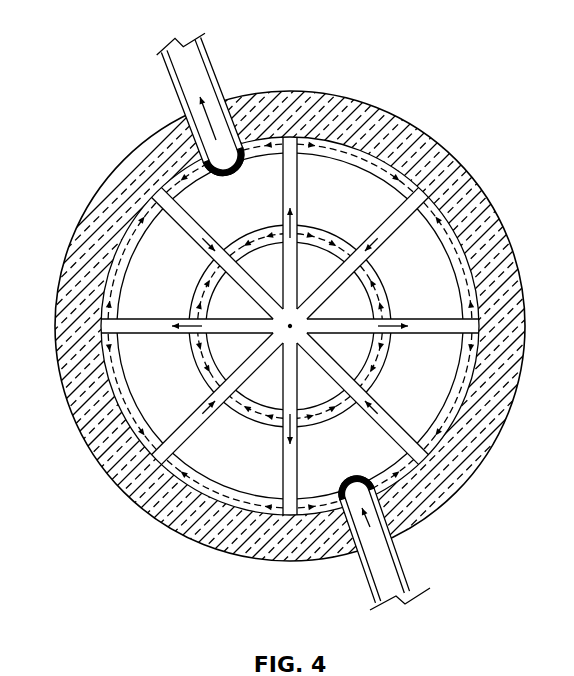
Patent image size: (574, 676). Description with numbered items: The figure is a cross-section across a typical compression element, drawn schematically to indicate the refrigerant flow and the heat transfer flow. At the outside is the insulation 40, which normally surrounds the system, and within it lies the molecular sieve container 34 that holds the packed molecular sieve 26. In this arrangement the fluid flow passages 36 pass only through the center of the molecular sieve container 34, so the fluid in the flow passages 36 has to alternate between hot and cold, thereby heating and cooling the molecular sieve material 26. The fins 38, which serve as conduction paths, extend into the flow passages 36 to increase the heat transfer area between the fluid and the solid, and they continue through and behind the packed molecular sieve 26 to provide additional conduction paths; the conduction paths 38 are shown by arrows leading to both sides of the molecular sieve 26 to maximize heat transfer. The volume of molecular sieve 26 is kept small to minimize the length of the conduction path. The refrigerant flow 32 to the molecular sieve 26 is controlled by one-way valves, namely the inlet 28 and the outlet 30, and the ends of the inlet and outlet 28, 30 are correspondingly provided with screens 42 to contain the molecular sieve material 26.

The molecular sieve 26 is at (290, 326).
The inlet 28 is at (391, 530).
The outlet 30 is at (218, 147).
The refrigerant flow 32 is at (286, 318).
The molecular sieve container 34 is at (506, 261).
The flow passages 36 is at (289, 325).
The fins 38 is at (290, 326).
The insulation 40 is at (440, 148).
The screens 42 is at (228, 165).